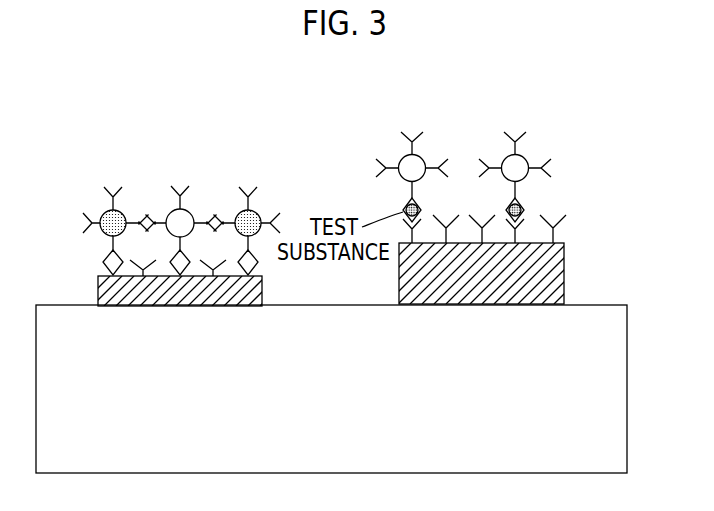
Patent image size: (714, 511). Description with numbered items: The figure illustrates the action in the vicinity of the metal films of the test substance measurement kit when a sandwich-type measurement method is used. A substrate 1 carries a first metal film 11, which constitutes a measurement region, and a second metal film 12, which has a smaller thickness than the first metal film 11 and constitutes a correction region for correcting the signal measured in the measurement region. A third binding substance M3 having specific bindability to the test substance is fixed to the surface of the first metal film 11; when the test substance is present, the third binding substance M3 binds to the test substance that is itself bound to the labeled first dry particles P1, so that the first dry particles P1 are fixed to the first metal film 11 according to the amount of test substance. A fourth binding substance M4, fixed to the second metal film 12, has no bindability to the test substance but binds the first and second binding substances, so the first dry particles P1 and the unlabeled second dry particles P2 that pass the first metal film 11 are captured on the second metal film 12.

The substrate 1 is at (620, 375).
The first metal film 11 is at (558, 294).
The second metal film 12 is at (263, 297).
The first dry particles P1 is at (184, 212).
The second dry particles P2 is at (104, 212).
The third binding substance M3 is at (566, 216).
The fourth binding substance M4 is at (102, 265).